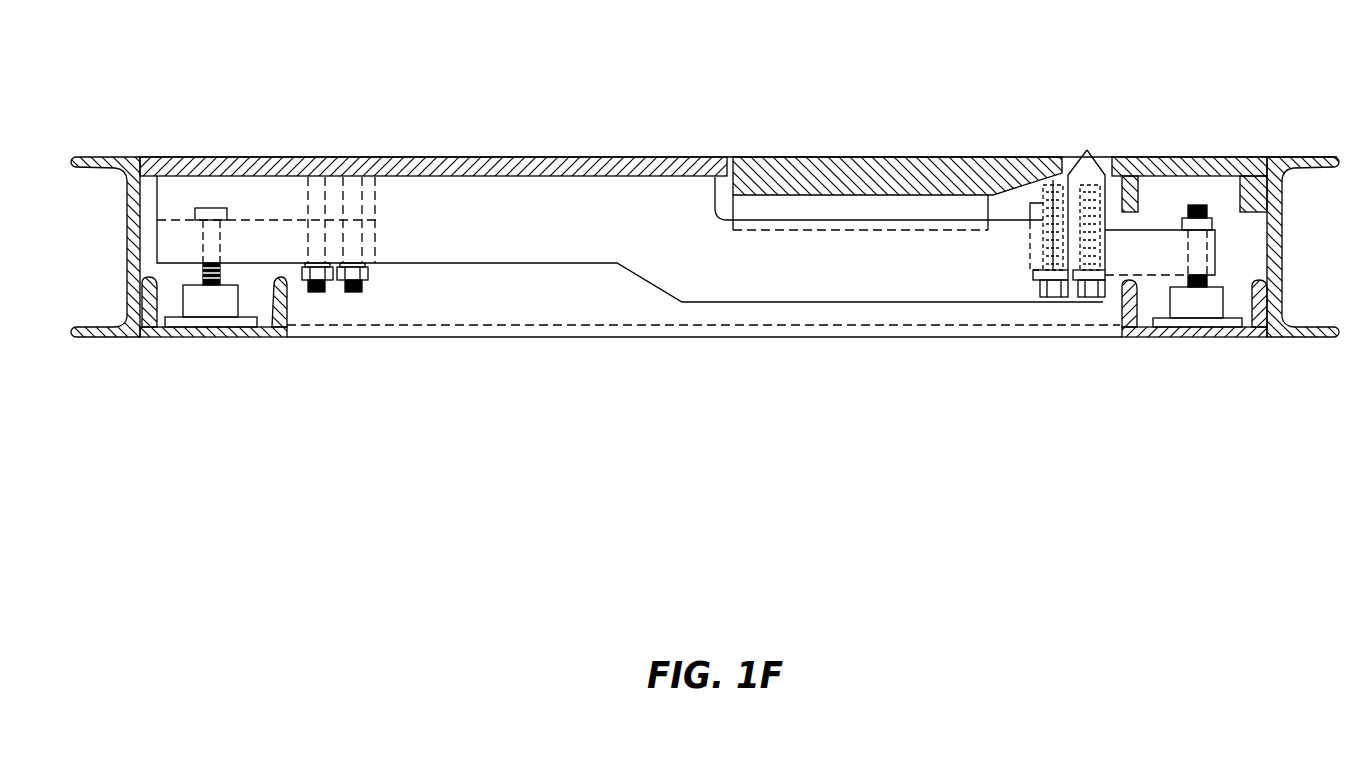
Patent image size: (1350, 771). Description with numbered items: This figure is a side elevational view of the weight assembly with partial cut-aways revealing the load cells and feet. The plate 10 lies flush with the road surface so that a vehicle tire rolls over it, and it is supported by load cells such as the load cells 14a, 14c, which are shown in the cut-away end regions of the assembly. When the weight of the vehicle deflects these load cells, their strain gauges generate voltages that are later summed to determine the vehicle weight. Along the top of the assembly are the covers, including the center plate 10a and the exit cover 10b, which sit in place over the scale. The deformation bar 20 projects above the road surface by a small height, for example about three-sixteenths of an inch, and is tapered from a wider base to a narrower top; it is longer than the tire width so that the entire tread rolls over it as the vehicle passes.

The plate 10 is at (420, 157).
The center plate 10a is at (850, 158).
The exit cover 10b is at (1182, 155).
The deformation bar 20 is at (1089, 143).
The load cell 14a is at (280, 243).
The load cell 14c is at (1133, 245).